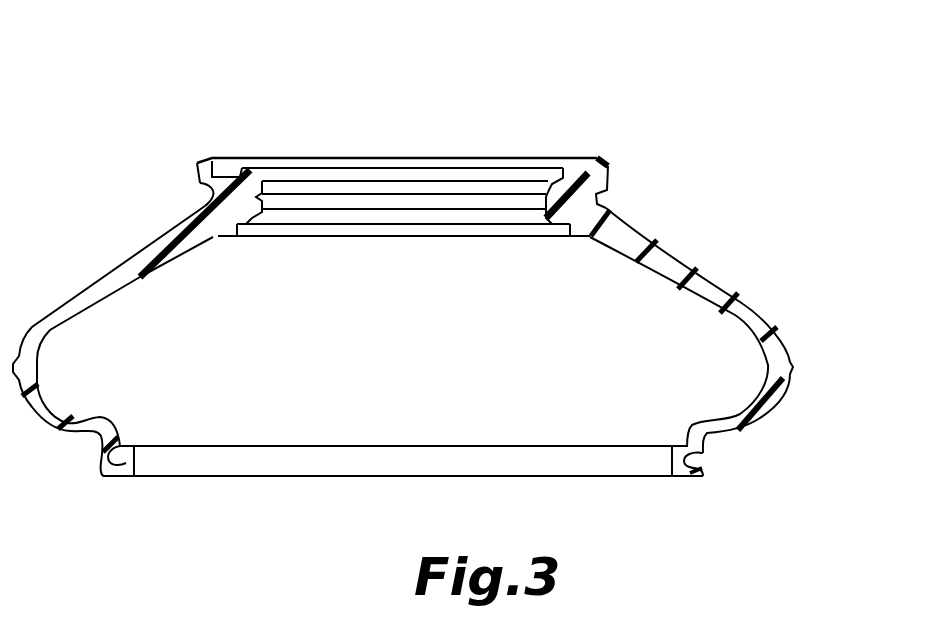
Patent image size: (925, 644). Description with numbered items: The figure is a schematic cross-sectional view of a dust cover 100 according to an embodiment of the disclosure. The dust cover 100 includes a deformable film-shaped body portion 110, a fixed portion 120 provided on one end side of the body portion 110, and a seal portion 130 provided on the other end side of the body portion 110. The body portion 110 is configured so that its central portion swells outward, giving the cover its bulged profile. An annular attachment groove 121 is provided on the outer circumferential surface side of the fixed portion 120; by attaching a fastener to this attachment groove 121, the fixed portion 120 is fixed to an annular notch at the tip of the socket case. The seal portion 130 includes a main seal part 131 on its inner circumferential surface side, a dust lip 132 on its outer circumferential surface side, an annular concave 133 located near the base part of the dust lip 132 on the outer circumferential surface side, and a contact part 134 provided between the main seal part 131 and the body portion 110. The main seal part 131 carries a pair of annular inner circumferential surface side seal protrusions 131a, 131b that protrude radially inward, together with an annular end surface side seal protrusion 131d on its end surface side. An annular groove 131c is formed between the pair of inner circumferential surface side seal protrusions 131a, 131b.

The dust cover 100 is at (708, 95).
The body portion 110 is at (716, 290).
The fixed portion 120 is at (745, 468).
The attachment groove 121 is at (703, 463).
The seal portion 130 is at (603, 152).
The main seal part 131 is at (296, 152).
The inner circumferential surface side seal protrusion 131a is at (546, 214).
The inner circumferential surface side seal protrusion 131b is at (543, 187).
The annular groove 131c is at (545, 203).
The end surface side seal protrusion 131d is at (553, 170).
The dust lip 132 is at (205, 163).
The annular concave 133 is at (208, 197).
The contact part 134 is at (240, 238).